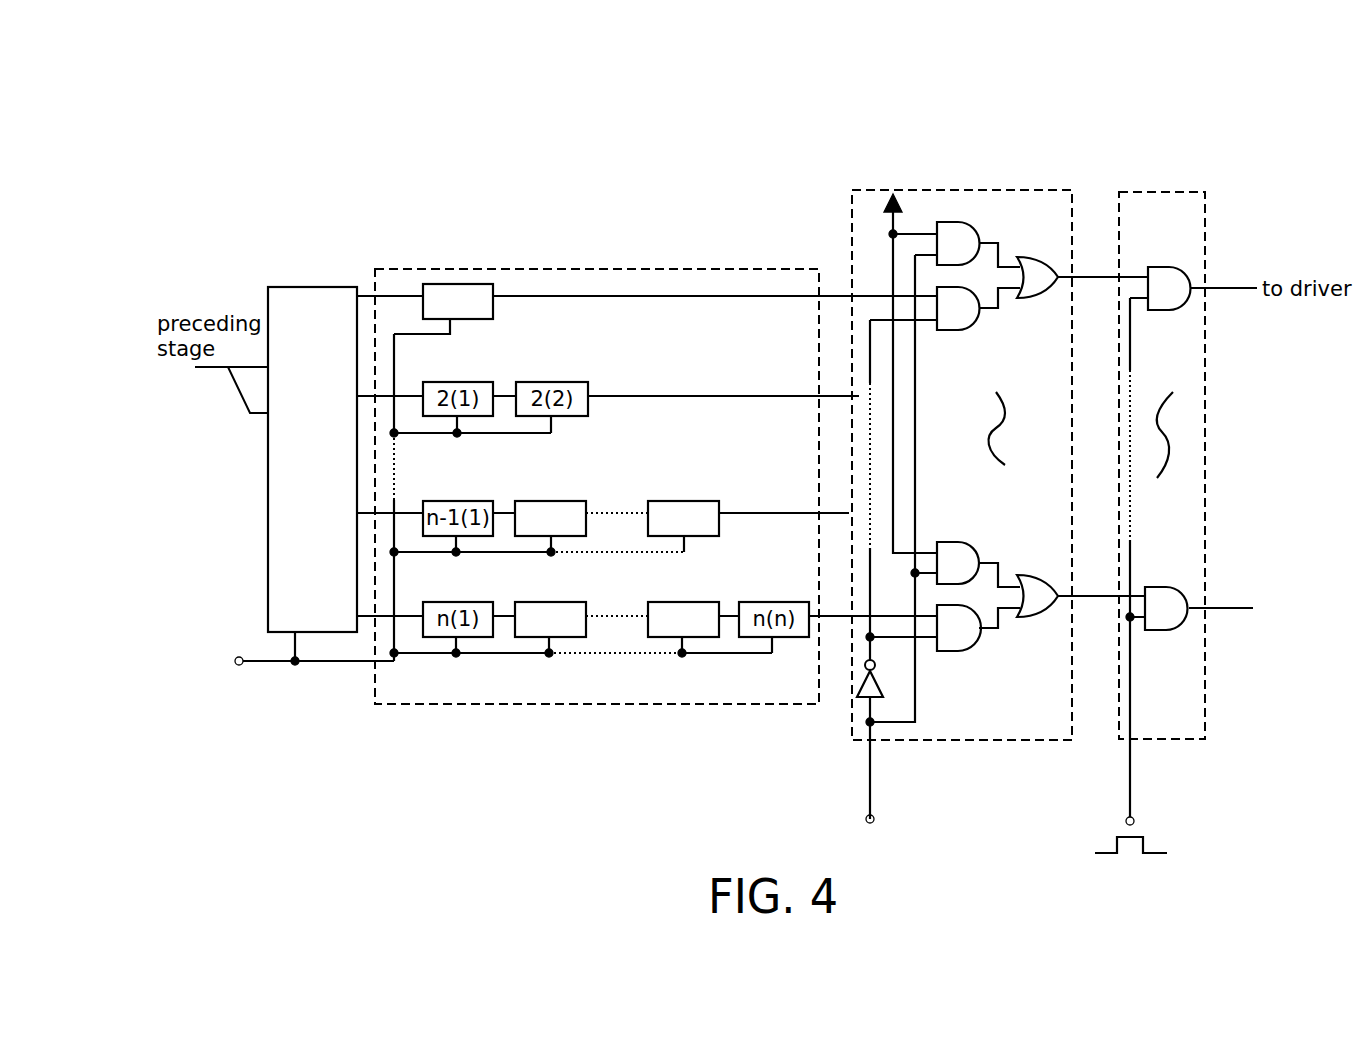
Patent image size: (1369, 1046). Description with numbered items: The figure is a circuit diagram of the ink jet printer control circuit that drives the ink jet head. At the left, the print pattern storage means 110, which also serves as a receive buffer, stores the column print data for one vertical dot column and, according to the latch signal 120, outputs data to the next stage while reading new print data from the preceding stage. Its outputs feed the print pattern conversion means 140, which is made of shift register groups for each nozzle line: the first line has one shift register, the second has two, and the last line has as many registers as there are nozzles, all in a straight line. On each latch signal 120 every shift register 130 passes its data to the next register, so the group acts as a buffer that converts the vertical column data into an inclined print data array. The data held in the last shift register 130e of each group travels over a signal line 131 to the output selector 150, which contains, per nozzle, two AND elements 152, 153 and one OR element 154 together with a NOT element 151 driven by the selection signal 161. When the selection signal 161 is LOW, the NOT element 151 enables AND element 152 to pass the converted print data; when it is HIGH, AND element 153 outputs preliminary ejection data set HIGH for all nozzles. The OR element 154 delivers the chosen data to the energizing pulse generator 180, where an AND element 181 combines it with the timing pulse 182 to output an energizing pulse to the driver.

The print pattern storage means 110 is at (268, 568).
The latch signal 120 is at (236, 666).
The shift register 130 is at (458, 283).
The last shift register 130e is at (705, 537).
The signal line 131 is at (740, 270).
The print pattern conversion means 140 is at (600, 295).
The output selector 150 is at (955, 195).
The NOT element 151 is at (897, 722).
The AND element 152 is at (955, 322).
The AND element 153 is at (948, 232).
The OR element 154 is at (1033, 265).
The selection signal 161 is at (874, 820).
The energizing pulse generator 180 is at (1160, 195).
The AND element 181 is at (1170, 278).
The timing pulse 182 is at (1134, 822).